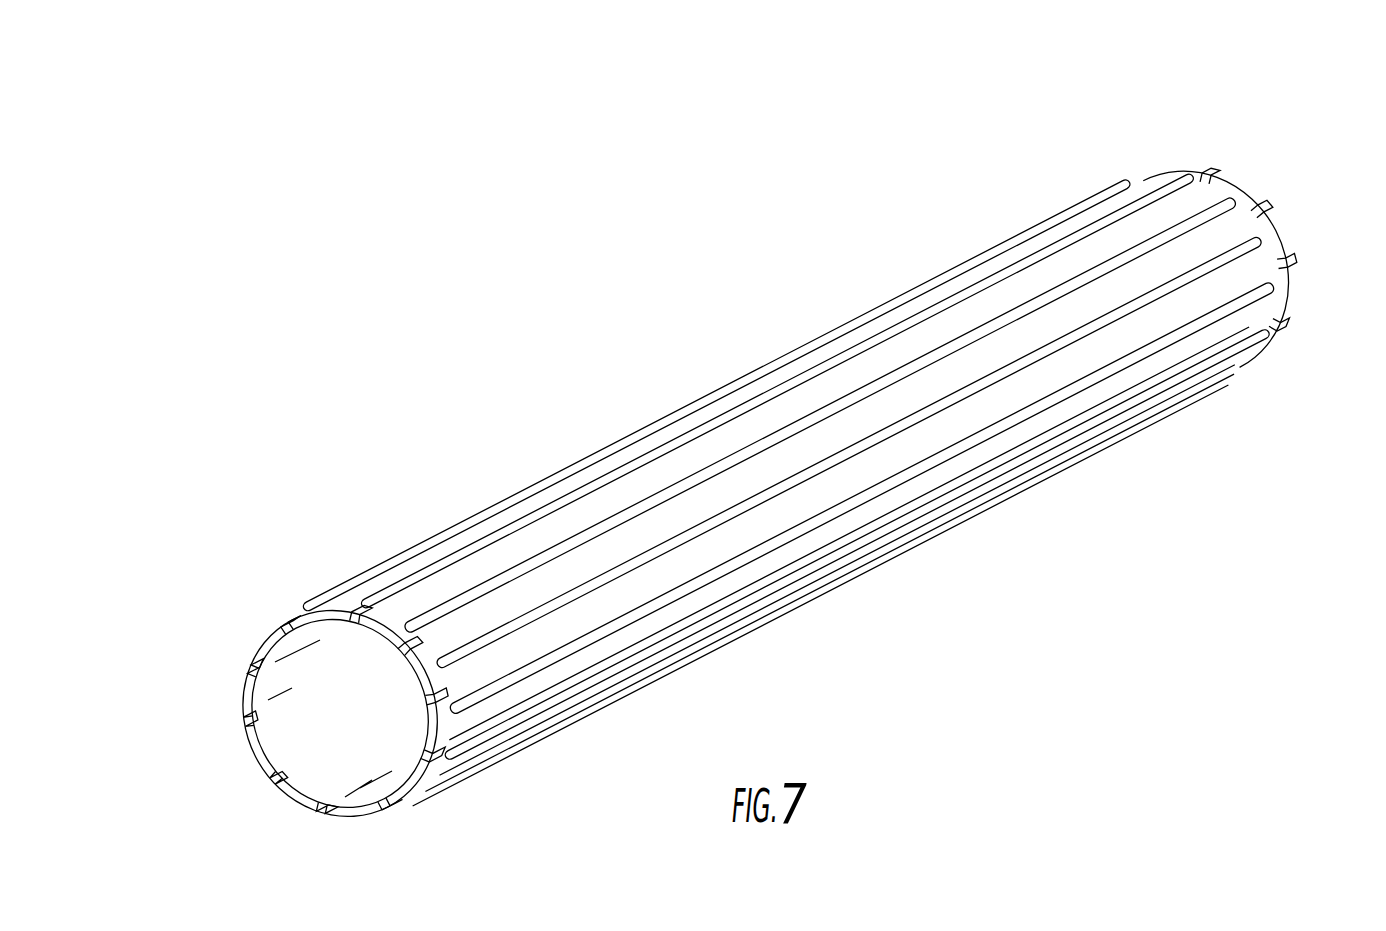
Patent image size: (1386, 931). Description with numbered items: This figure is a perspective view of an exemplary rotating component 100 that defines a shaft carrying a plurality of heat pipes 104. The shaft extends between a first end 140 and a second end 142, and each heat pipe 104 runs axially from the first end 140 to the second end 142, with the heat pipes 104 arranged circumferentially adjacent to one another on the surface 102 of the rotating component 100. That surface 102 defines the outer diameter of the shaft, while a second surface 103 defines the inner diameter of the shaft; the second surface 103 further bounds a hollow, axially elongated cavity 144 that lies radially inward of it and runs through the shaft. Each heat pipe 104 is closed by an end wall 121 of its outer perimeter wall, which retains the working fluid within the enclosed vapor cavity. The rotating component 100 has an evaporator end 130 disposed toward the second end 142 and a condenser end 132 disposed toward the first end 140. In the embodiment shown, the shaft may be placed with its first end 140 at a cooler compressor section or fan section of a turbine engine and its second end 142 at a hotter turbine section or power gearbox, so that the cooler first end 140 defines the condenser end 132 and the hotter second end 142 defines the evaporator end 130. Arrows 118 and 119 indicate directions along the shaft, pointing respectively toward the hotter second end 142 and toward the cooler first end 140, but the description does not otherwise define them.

The rotating component 100 is at (800, 250).
The surface 102 is at (610, 465).
The second surface 103 is at (268, 689).
The heat pipe 104 is at (851, 397).
The distal direction 118 is at (1073, 195).
The proximal direction 119 is at (348, 488).
The end wall 121 is at (1282, 332).
The evaporator end 130 is at (1108, 120).
The condenser end 132 is at (294, 497).
The first end 140 is at (270, 567).
The second end 142 is at (1155, 172).
The hollow, axially elongated cavity 144 is at (363, 733).